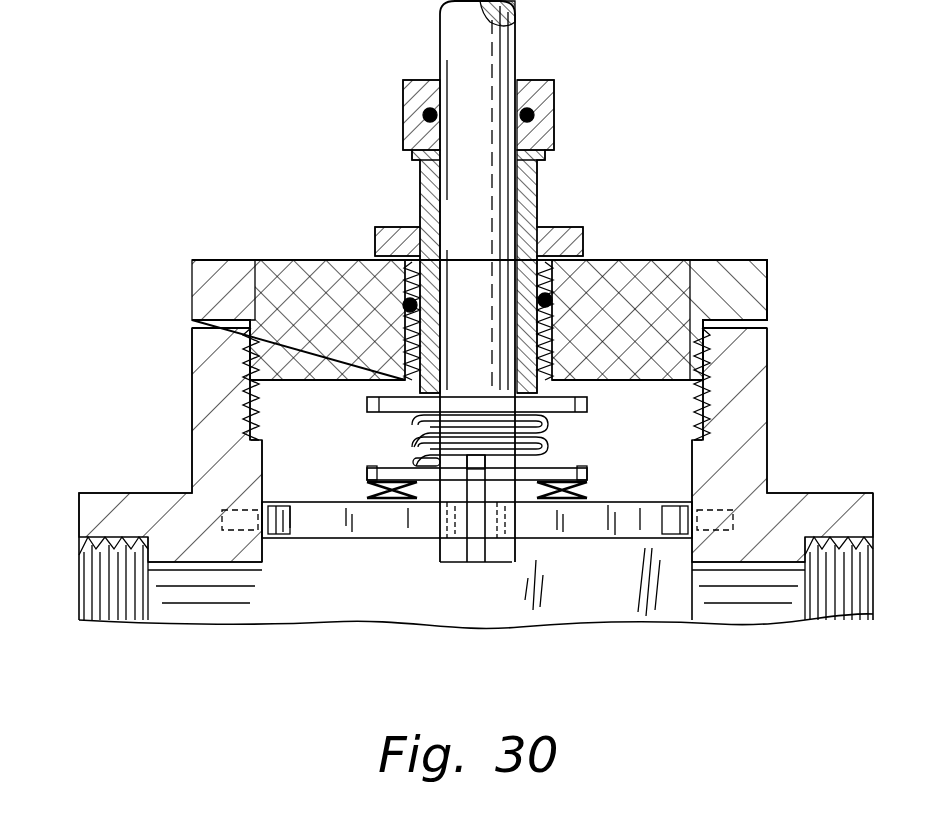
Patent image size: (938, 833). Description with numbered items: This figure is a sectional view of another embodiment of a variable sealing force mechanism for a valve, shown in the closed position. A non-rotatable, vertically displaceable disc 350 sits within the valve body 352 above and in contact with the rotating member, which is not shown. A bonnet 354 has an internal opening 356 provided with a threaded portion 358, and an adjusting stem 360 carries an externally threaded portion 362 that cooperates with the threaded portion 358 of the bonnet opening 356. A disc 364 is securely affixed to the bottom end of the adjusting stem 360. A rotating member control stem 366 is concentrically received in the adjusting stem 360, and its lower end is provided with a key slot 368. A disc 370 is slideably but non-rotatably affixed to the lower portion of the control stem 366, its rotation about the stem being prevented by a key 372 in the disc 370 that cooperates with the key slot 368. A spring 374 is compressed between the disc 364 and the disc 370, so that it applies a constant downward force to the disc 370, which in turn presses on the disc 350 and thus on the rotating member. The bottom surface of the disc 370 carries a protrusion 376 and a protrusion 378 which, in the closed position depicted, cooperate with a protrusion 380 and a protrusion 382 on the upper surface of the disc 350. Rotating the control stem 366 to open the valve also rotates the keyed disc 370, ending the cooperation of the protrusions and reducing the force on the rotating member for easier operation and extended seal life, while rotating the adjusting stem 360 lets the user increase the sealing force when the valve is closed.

The disc 350 is at (307, 530).
The valve body 352 is at (205, 363).
The bonnet 354 is at (205, 291).
The internal opening 356 is at (412, 318).
The threaded portion 358 is at (543, 340).
The adjusting stem 360 is at (535, 175).
The externally threaded portion 362 is at (415, 365).
The disc 364 is at (553, 403).
The rotating member control stem 366 is at (482, 60).
The key slot 368 is at (478, 563).
The disc 370 is at (488, 468).
The key 372 is at (587, 466).
The spring 374 is at (413, 435).
The protrusion 376 is at (370, 478).
The protrusion 378 is at (593, 493).
The protrusion 380 is at (388, 525).
The protrusion 382 is at (557, 525).